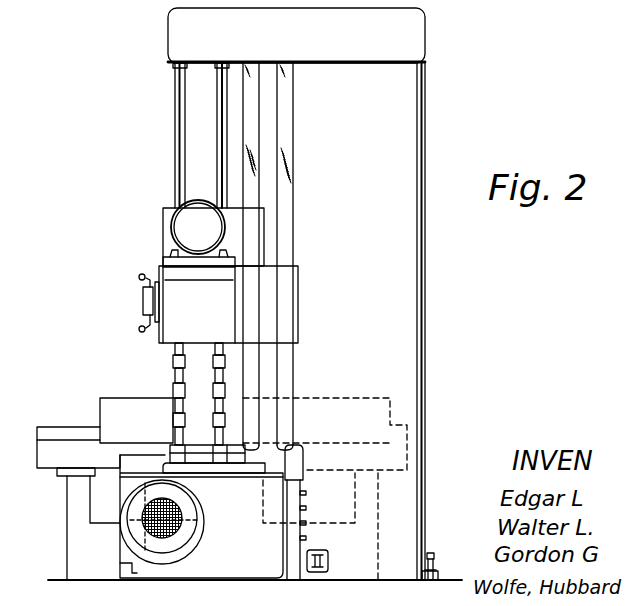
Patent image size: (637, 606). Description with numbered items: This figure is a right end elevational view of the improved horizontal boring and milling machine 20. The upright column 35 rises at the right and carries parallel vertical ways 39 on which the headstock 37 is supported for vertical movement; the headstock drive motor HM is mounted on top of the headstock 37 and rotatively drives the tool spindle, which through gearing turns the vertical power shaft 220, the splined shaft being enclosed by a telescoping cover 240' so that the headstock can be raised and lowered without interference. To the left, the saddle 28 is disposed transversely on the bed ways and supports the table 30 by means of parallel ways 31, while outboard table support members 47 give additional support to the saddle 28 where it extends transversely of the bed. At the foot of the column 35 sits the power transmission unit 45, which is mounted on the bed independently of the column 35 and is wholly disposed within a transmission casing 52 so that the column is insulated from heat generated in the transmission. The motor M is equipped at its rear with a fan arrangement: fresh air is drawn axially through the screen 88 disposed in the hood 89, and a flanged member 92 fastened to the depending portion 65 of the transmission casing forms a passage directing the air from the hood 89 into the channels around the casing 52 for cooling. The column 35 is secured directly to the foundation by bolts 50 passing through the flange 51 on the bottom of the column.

The horizontal boring and milling machine 20 is at (436, 288).
The upright column 35 is at (420, 153).
The parallel vertical ways 39 is at (252, 120).
The headstock drive motor HM is at (192, 208).
The headstock 37 is at (284, 298).
The table 30 is at (137, 403).
The parallel ways 31 is at (76, 423).
The saddle 28 is at (53, 463).
The outboard parallel table support members 47 is at (77, 547).
The telescoping cover 240' is at (183, 438).
The vertical power shaft 220 is at (212, 468).
The power transmission unit 45 is at (118, 547).
The motor M is at (179, 528).
The screen 88 is at (182, 527).
The hood 89 is at (194, 548).
The flanged member 92 is at (185, 557).
The depending portion of the transmission casing 65 is at (120, 567).
The transmission casing 52 is at (275, 540).
The bolts 50 is at (431, 552).
The flange 51 is at (437, 571).